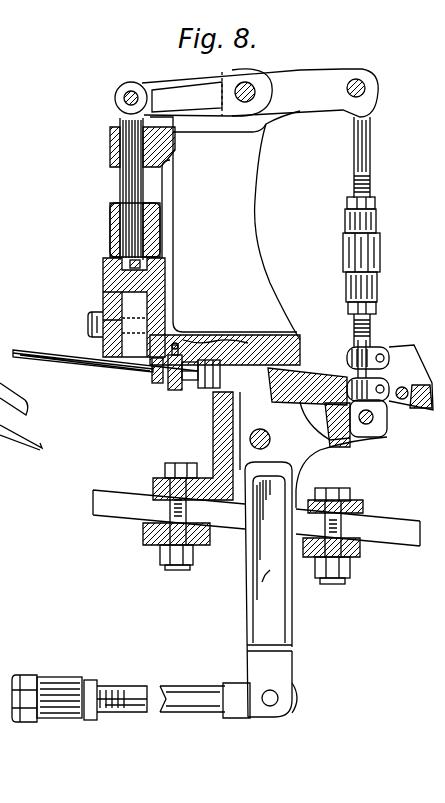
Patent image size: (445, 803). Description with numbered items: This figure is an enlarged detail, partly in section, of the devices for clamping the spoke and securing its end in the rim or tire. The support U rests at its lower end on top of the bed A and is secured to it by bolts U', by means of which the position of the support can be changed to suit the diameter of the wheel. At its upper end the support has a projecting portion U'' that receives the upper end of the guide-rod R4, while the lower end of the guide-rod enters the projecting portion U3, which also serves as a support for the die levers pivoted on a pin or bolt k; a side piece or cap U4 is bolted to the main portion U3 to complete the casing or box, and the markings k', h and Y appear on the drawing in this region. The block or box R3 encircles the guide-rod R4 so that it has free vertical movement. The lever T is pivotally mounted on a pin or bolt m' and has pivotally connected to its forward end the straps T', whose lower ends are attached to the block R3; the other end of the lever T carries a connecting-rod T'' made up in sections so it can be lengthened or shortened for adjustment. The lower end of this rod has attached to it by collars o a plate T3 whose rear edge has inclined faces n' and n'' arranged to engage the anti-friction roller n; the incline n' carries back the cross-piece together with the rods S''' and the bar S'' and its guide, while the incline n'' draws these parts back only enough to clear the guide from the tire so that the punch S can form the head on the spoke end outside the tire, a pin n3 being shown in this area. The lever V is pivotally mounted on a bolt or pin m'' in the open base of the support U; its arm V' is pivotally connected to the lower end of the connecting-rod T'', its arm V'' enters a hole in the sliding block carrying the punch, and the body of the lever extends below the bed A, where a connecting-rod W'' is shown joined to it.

The lever T is at (246, 93).
The straps T' is at (111, 107).
The connecting-rod T'' is at (373, 215).
The plate T3 is at (378, 342).
The pin or bolt m' is at (266, 92).
The bolt or pin m'' is at (273, 441).
The collars o is at (359, 374).
The anti-friction roller n is at (76, 381).
The inclined face n' is at (411, 377).
The pin n3 is at (414, 389).
The inclined face n'' is at (389, 421).
The support U is at (225, 238).
The bolts U' is at (255, 488).
The projecting portion U'' is at (126, 147).
The projecting portion U3 is at (104, 270).
The side piece or cap U4 is at (103, 292).
The guide-rod R4 is at (120, 186).
The block or box R3 is at (116, 236).
The pin or bolt k is at (84, 324).
The slot k' is at (134, 334).
The shaft h is at (158, 383).
The washer Y is at (157, 383).
The punch S is at (205, 385).
The support S'' is at (163, 379).
The rods S''' is at (182, 389).
The lever V is at (271, 589).
The arm V' is at (327, 438).
The arm V'' is at (295, 427).
The bed A is at (256, 518).
The connecting rod W'' is at (131, 686).